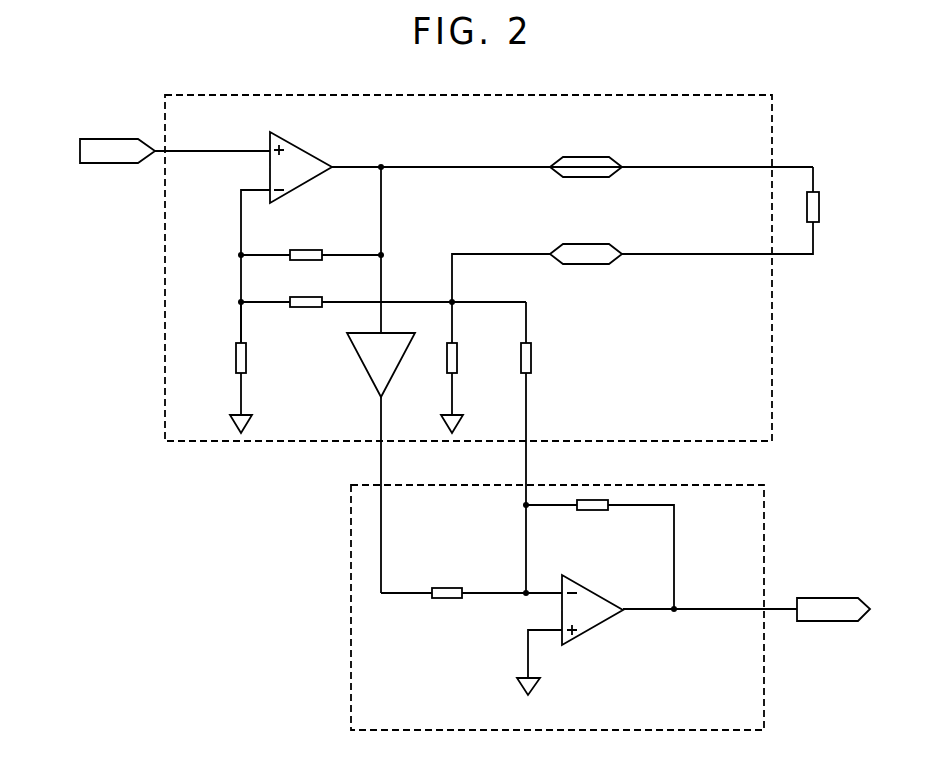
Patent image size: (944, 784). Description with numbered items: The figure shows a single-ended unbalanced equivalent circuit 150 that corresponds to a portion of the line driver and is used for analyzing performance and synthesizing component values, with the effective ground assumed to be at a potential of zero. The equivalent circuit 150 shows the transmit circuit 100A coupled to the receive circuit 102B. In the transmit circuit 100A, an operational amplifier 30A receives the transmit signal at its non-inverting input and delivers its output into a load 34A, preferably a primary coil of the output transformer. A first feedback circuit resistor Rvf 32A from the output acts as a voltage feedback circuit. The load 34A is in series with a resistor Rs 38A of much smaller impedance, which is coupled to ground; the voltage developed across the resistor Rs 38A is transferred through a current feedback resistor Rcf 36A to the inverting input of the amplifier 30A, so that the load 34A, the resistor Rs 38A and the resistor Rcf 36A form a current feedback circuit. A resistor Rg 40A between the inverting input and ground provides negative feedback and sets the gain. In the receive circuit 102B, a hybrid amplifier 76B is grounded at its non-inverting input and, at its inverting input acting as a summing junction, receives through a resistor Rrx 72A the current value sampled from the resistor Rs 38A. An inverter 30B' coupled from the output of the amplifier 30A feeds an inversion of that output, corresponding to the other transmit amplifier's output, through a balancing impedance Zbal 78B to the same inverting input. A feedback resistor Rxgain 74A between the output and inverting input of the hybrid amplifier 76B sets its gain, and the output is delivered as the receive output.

The single-ended unbalanced equivalent circuit 150 is at (666, 69).
The transmit circuit 100A is at (771, 350).
The operational amplifier 30A is at (303, 153).
The first feedback circuit resistor Rvf 32A is at (320, 249).
The current feedback resistor Rcf 36A is at (312, 298).
The resistor Rg 40A is at (246, 357).
The inverter 30B' is at (361, 375).
The resistor Rs 38A is at (456, 352).
The resistor Rrx 72A is at (532, 355).
The load 34A is at (818, 207).
The receive circuit 102B is at (351, 620).
The feedback resistor Rxgain 74A is at (590, 500).
The balancing impedance Zbal 78B is at (437, 588).
The hybrid amplifier 76B is at (592, 625).